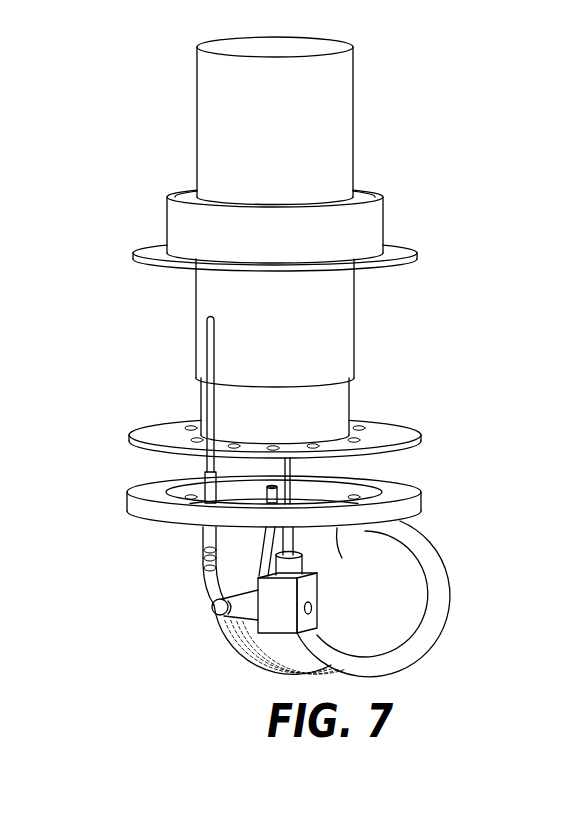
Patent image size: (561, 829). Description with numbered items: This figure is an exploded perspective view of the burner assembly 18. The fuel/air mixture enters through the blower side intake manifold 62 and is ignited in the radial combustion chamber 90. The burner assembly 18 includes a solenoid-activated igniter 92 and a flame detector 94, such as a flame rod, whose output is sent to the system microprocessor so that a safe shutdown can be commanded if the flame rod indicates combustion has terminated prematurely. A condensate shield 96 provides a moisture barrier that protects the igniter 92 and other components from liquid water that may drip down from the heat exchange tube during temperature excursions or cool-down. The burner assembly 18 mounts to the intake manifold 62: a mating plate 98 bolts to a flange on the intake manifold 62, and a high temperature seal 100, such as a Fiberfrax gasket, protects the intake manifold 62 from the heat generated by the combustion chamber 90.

The burner assembly 18 is at (78, 89).
The intake manifold 62 is at (476, 532).
The radial combustion chamber 90 is at (200, 405).
The solenoid-activated igniter 92 is at (257, 568).
The flame detector 94 is at (207, 347).
The condensate shield 96 is at (383, 206).
The mating plate 98 is at (392, 430).
The high temperature seal 100 is at (405, 490).